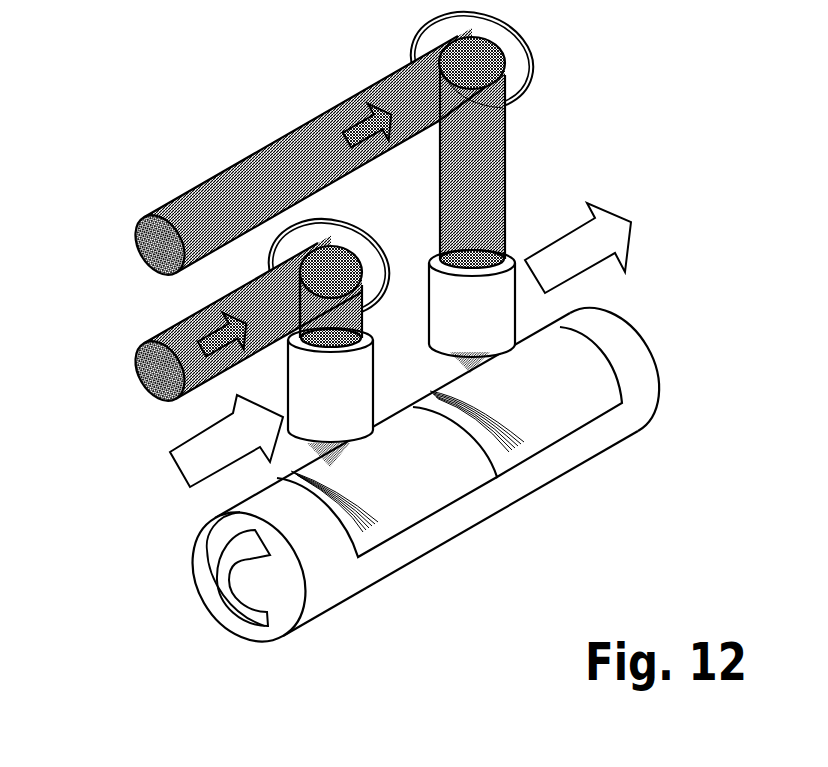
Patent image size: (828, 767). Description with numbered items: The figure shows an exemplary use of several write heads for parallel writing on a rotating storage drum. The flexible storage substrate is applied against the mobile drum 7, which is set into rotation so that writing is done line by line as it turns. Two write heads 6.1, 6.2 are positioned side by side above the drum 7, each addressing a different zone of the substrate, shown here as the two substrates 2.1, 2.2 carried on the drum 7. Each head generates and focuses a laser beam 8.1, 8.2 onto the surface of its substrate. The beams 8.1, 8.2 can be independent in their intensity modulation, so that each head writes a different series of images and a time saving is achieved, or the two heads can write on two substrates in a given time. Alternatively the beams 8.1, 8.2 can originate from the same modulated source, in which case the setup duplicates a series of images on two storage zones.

The drum 7 is at (403, 557).
The substrate 2.1 is at (450, 462).
The substrate 2.2 is at (580, 400).
The write head 6.1 is at (487, 305).
The write head 6.2 is at (306, 397).
The beam 8.1 is at (278, 173).
The beam 8.2 is at (182, 340).